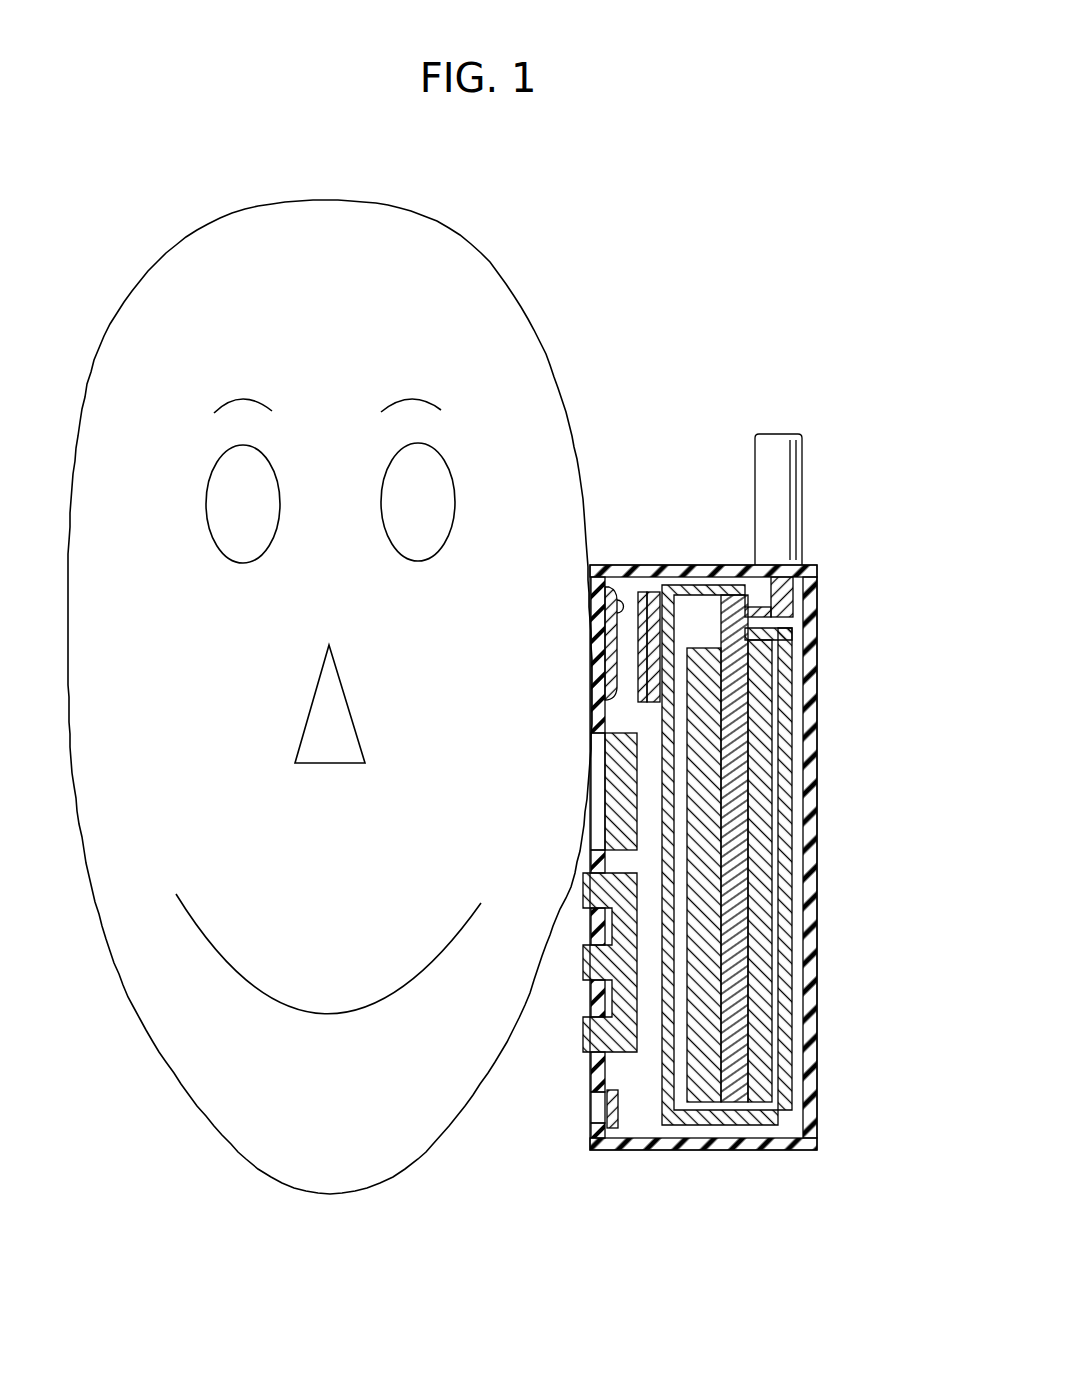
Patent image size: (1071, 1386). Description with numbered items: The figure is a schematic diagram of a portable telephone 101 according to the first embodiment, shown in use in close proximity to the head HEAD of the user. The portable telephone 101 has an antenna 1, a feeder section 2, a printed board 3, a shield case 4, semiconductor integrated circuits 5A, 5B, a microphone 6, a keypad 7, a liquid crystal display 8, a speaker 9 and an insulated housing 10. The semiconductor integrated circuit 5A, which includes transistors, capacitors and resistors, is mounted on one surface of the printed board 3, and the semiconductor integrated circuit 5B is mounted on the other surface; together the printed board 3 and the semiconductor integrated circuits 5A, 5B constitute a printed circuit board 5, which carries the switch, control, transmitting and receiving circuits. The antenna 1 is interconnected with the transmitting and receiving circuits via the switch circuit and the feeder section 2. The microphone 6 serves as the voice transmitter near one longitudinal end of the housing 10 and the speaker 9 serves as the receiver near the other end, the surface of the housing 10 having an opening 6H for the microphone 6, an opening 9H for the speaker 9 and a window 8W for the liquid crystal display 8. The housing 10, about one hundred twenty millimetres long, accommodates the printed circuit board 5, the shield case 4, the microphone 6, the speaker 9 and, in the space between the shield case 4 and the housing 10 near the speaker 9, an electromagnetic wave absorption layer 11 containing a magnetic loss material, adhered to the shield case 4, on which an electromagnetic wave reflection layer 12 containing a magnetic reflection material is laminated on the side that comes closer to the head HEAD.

The head of the user HEAD is at (221, 244).
The portable telephone 101 is at (691, 447).
The antenna 1 is at (766, 432).
The feeder section 2 is at (745, 588).
The printed board 3 is at (719, 626).
The shield case 4 is at (785, 1128).
The printed circuit board 5 is at (718, 954).
The semiconductor integrated circuit 5A is at (703, 1088).
The semiconductor integrated circuit 5B is at (760, 1093).
The microphone 6 is at (628, 1118).
The opening for the microphone 6H is at (600, 1107).
The keypad 7 is at (590, 1037).
The liquid crystal display 8 is at (617, 818).
The window for the liquid crystal display 8W is at (600, 777).
The speaker 9 is at (593, 608).
The opening for the speaker 9H is at (590, 637).
The insulated housing 10 is at (597, 1140).
The electromagnetic wave absorption layer 11 is at (653, 592).
The electromagnetic wave reflection layer 12 is at (640, 588).